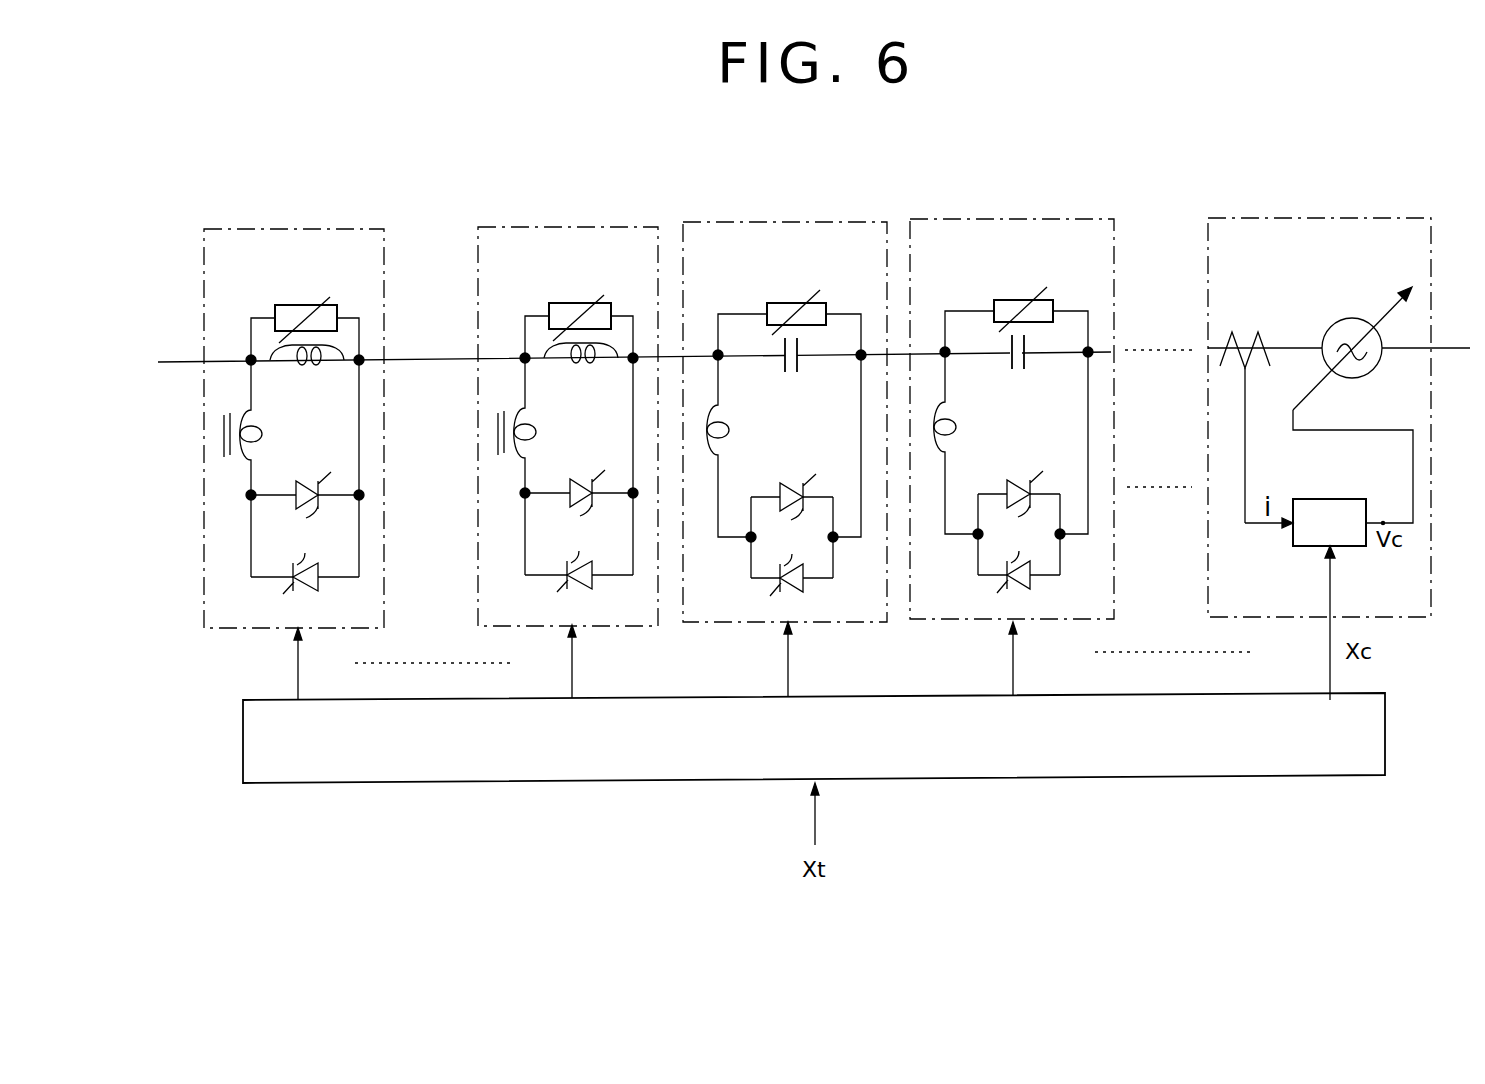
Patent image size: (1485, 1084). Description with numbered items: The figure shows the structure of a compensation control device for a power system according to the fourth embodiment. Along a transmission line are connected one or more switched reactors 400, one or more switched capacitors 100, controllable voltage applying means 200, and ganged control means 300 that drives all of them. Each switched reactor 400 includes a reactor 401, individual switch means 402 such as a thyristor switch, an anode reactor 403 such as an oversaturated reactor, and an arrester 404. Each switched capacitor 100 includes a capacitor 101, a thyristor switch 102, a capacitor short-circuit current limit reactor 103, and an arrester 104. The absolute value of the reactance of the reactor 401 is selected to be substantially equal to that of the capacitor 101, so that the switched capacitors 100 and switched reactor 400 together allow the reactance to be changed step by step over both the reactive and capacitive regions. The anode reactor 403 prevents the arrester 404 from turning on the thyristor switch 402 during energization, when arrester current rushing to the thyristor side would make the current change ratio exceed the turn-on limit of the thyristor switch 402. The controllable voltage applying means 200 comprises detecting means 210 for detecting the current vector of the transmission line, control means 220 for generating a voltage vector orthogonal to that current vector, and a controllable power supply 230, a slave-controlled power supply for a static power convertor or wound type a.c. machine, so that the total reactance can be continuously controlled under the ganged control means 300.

The switched reactor 400 is at (297, 229).
The arrester 404 is at (333, 306).
The reactor 401 is at (316, 368).
The anode reactor 403 is at (262, 436).
The individual switch means 402 is at (442, 473).
The switched capacitor 100 is at (790, 222).
The arrester 104 is at (823, 305).
The capacitor 101 is at (800, 373).
The capacitor short-circuit current limit reactor 103 is at (729, 432).
The thyristor switch 102 is at (903, 471).
The controllable voltage applying means 200 is at (1322, 218).
The detecting means 210 is at (1258, 337).
The controllable power supply 230 is at (1372, 372).
The control means 220 is at (1333, 499).
The ganged control means 300 is at (1385, 735).